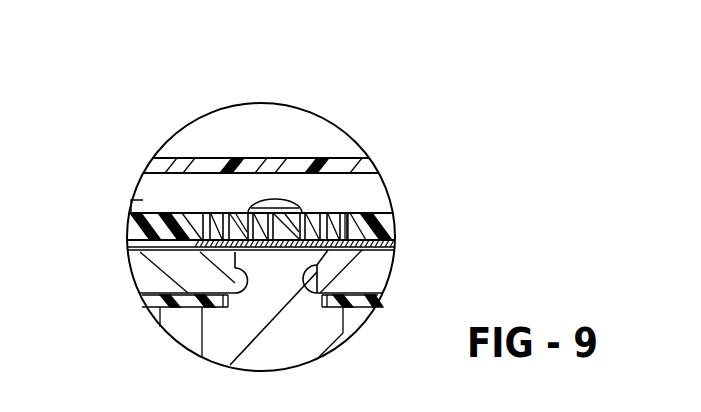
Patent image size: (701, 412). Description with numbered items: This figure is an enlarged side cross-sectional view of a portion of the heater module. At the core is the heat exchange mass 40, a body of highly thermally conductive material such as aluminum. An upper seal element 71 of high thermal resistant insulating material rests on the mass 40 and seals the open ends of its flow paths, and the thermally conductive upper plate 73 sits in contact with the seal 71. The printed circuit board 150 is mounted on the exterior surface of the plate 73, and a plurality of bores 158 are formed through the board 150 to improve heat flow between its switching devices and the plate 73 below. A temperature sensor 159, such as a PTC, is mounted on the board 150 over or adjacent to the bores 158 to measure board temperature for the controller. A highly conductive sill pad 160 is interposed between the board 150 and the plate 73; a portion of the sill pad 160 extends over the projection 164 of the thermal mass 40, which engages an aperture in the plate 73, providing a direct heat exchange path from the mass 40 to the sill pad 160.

The heat exchange mass 40 is at (333, 323).
The seal element 71 is at (177, 310).
The upper plate 73 is at (382, 284).
The printed circuit board 150 is at (158, 212).
The bores 158 is at (207, 212).
The temperature sensor 159 is at (278, 200).
The sill pad 160 is at (396, 244).
The projection 164 is at (273, 272).